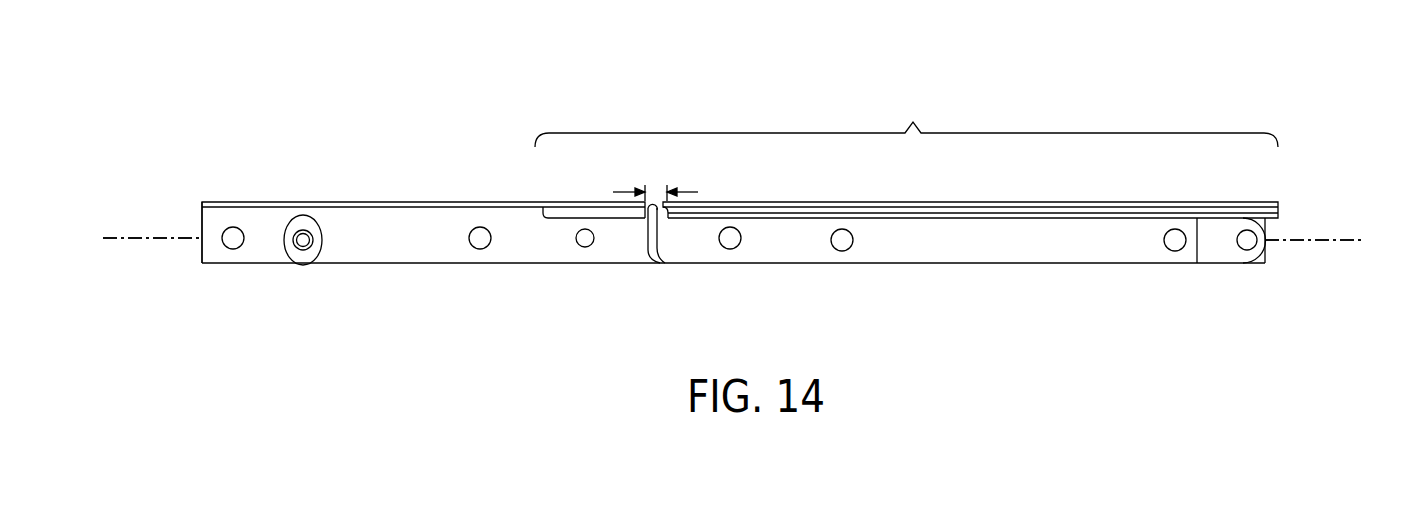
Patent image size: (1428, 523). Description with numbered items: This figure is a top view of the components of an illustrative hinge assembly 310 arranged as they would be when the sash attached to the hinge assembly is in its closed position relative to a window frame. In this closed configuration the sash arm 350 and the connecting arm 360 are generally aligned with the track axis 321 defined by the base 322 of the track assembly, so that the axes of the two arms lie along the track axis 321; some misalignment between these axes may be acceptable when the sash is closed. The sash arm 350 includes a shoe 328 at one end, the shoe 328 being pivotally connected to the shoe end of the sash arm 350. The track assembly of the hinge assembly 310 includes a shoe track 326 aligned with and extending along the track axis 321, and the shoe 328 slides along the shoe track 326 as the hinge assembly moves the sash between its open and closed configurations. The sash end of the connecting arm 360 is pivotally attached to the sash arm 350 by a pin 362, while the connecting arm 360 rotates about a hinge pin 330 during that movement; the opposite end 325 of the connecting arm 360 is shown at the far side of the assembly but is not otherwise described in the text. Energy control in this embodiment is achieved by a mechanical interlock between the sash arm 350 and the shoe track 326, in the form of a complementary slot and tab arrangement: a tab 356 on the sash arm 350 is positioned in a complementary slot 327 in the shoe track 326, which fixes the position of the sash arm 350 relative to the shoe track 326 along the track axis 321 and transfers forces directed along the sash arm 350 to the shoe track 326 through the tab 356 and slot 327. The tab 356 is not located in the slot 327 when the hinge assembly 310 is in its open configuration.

The hinge assembly 310 is at (1268, 94).
The track axis 321 is at (140, 240).
The base 322 is at (267, 253).
The end of inner member 325 is at (202, 212).
The shoe track 326 is at (906, 116).
The slot 327 is at (655, 192).
The shoe 328 is at (1195, 251).
The hinge pin 330 is at (304, 238).
The sash arm 350 is at (1045, 264).
The tab 356 is at (653, 208).
The connecting arm 360 is at (417, 247).
The pin 362 is at (727, 248).